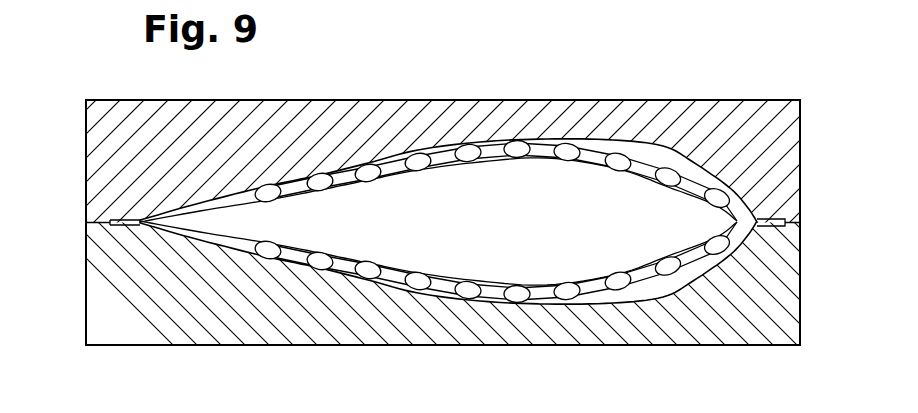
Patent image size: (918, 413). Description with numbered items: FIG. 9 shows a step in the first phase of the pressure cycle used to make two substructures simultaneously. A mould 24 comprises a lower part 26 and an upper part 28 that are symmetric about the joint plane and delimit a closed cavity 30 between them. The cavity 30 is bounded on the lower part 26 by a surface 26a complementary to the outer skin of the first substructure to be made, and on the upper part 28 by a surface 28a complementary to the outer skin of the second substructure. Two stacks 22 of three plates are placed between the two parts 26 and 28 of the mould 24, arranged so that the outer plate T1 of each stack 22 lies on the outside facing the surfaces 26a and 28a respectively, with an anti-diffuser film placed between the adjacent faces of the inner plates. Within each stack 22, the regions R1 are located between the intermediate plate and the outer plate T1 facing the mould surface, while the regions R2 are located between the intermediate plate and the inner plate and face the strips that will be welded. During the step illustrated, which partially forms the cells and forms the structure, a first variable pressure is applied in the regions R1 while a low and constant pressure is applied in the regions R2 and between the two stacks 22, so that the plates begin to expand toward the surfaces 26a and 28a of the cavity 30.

The stack of plates 22 is at (353, 195).
The mould 24 is at (754, 86).
The lower part 26 is at (112, 303).
The surface 26a is at (655, 293).
The upper part 28 is at (110, 145).
The surface 28a is at (647, 150).
The cavity 30 is at (448, 221).
The regions R1 is at (557, 150).
The regions R2 is at (620, 183).
The outer plate T1 is at (707, 163).